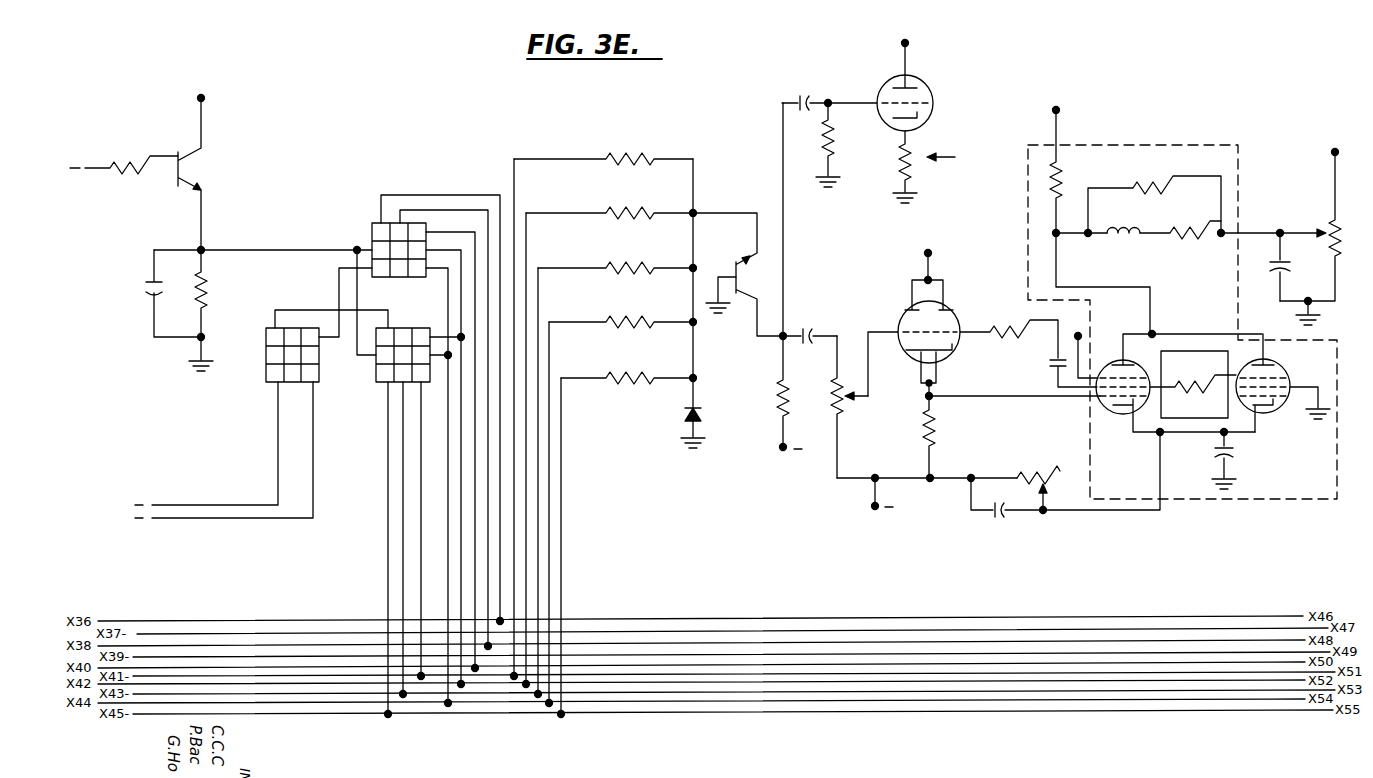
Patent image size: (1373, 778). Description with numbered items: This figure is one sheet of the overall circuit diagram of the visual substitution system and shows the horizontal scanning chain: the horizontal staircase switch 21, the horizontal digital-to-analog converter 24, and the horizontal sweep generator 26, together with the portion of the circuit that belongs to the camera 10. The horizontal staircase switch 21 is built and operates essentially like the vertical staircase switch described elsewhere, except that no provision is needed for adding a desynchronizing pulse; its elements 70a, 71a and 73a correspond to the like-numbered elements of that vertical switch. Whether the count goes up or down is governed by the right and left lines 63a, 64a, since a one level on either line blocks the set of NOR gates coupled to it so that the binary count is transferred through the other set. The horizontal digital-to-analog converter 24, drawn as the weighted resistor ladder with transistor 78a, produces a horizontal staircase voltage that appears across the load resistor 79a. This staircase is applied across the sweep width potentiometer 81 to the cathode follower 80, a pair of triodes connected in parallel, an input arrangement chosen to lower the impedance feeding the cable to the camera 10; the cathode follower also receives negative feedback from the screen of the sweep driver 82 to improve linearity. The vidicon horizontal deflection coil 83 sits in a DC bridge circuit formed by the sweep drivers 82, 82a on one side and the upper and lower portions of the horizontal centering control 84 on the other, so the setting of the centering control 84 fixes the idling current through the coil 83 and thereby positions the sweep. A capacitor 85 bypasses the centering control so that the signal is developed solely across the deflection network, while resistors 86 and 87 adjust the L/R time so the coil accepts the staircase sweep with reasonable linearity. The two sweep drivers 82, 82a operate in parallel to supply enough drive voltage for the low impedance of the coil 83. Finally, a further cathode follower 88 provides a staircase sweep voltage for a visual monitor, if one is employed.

The horizontal staircase switch 21 is at (462, 147).
The horizontal digital-to-analog converter 24 is at (742, 473).
The horizontal sweep generator 26 is at (1235, 553).
The camera 10 is at (1184, 298).
The switch element 70a is at (409, 277).
The switch element 71a is at (377, 374).
The switch element 73a is at (266, 368).
The right line 63a is at (200, 520).
The left line 64a is at (190, 503).
The transistor 78a is at (739, 272).
The load resistor 79a is at (776, 400).
The cathode follower 80 is at (916, 358).
The sweep width potentiometer 81 is at (833, 392).
The sweep driver 82 is at (1112, 412).
The sweep driver 82a is at (1270, 410).
The vidicon horizontal deflection coil 83 is at (1130, 229).
The horizontal centering control 84 is at (1327, 242).
The capacitor 85 is at (1272, 268).
The resistor 86 is at (1152, 186).
The resistor 87 is at (1197, 238).
The cathode follower 88 is at (928, 112).